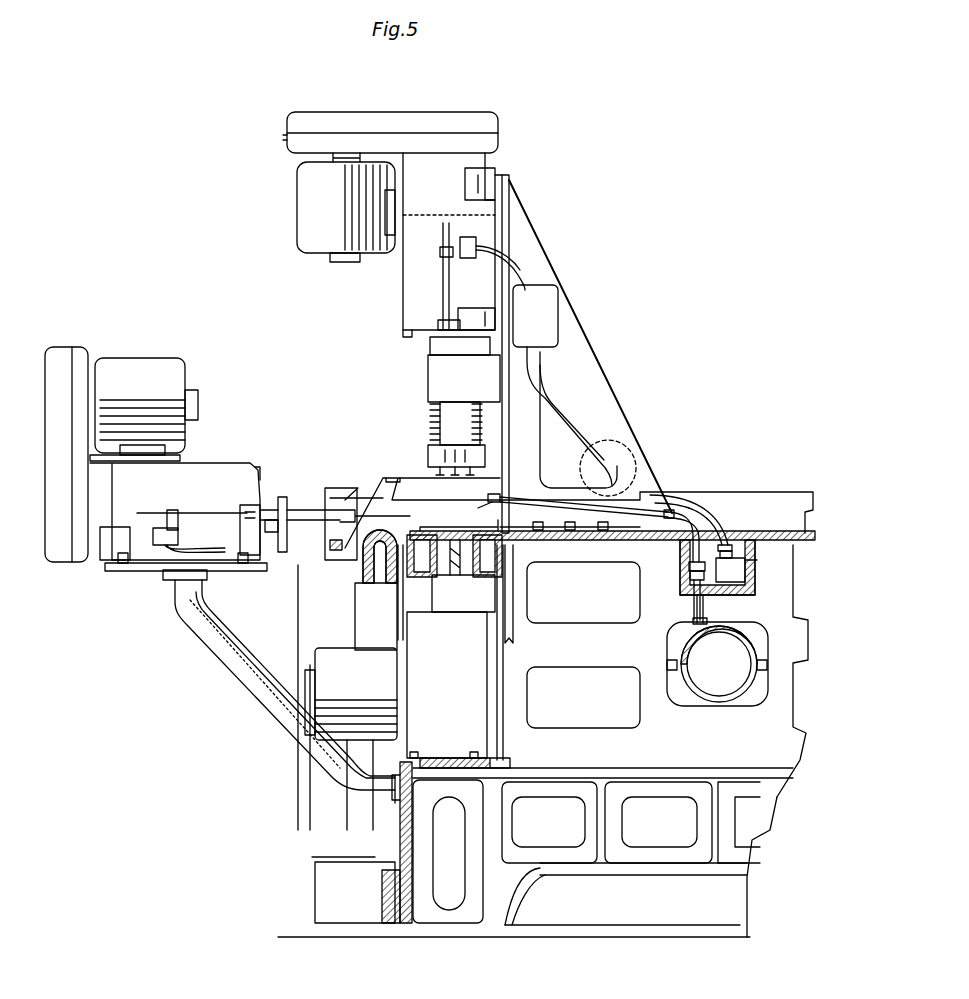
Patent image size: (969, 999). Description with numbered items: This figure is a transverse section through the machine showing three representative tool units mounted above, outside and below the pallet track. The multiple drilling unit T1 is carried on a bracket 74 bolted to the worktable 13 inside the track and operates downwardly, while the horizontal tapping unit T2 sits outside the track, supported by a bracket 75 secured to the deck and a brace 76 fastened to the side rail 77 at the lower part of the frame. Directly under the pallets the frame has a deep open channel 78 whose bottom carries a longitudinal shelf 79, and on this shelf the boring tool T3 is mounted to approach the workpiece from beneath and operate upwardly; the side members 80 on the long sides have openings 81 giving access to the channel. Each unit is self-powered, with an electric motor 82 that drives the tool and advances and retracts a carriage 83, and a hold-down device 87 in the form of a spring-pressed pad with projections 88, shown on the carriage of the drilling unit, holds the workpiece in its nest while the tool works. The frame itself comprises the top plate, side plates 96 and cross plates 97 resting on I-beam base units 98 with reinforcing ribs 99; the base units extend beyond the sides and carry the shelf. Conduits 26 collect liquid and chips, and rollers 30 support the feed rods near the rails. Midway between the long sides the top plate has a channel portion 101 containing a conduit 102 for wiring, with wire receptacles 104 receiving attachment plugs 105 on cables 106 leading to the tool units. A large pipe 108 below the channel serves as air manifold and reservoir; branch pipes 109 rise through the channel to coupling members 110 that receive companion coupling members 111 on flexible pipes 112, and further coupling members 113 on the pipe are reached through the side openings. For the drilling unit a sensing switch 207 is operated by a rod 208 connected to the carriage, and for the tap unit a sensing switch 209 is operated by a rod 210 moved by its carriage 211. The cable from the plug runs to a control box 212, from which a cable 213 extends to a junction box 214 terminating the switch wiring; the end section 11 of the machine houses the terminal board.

The multiple drilling unit T1 is at (500, 172).
The horizontal tapping unit T2 is at (236, 443).
The boring tool T3 is at (472, 683).
The end section 11 is at (790, 492).
The worktable 13 is at (643, 530).
The conduits 26 is at (398, 618).
The rollers 30 is at (418, 575).
The bracket 74 is at (580, 346).
The bracket 75 is at (378, 484).
The brace 76 is at (232, 661).
The side rail 77 is at (400, 820).
The channel 78 is at (500, 606).
The shelf 79 is at (446, 758).
The side members 80 is at (365, 569).
The openings 81 is at (365, 610).
The electric motor 82 is at (312, 222).
The carriage 83 is at (443, 376).
The hold-down device 87 is at (426, 453).
The projections 88 is at (480, 488).
The side plates 96 is at (500, 753).
The cross plates 97 is at (618, 734).
The base units 98 is at (570, 874).
The reinforcing ribs 99 is at (645, 852).
The channel portion 101 is at (680, 567).
The conduit 102 is at (745, 570).
The wire receptacles 104 is at (757, 561).
The attachment plugs 105 is at (742, 550).
The cables 106 is at (722, 510).
The pipe 108 is at (722, 706).
The pipes 109 is at (697, 618).
The coupling members 110 is at (685, 590).
The companion coupling members 111 is at (690, 568).
The flexible pipes 112 is at (695, 525).
The coupling members 113 is at (672, 665).
The sensing switch 207 is at (468, 237).
The rod 208 is at (443, 268).
The sensing switch 209 is at (160, 548).
The rod 210 is at (215, 503).
The carriage 211 is at (284, 497).
The control box 212 is at (600, 488).
The cable 213 is at (582, 445).
The junction box 214 is at (548, 312).